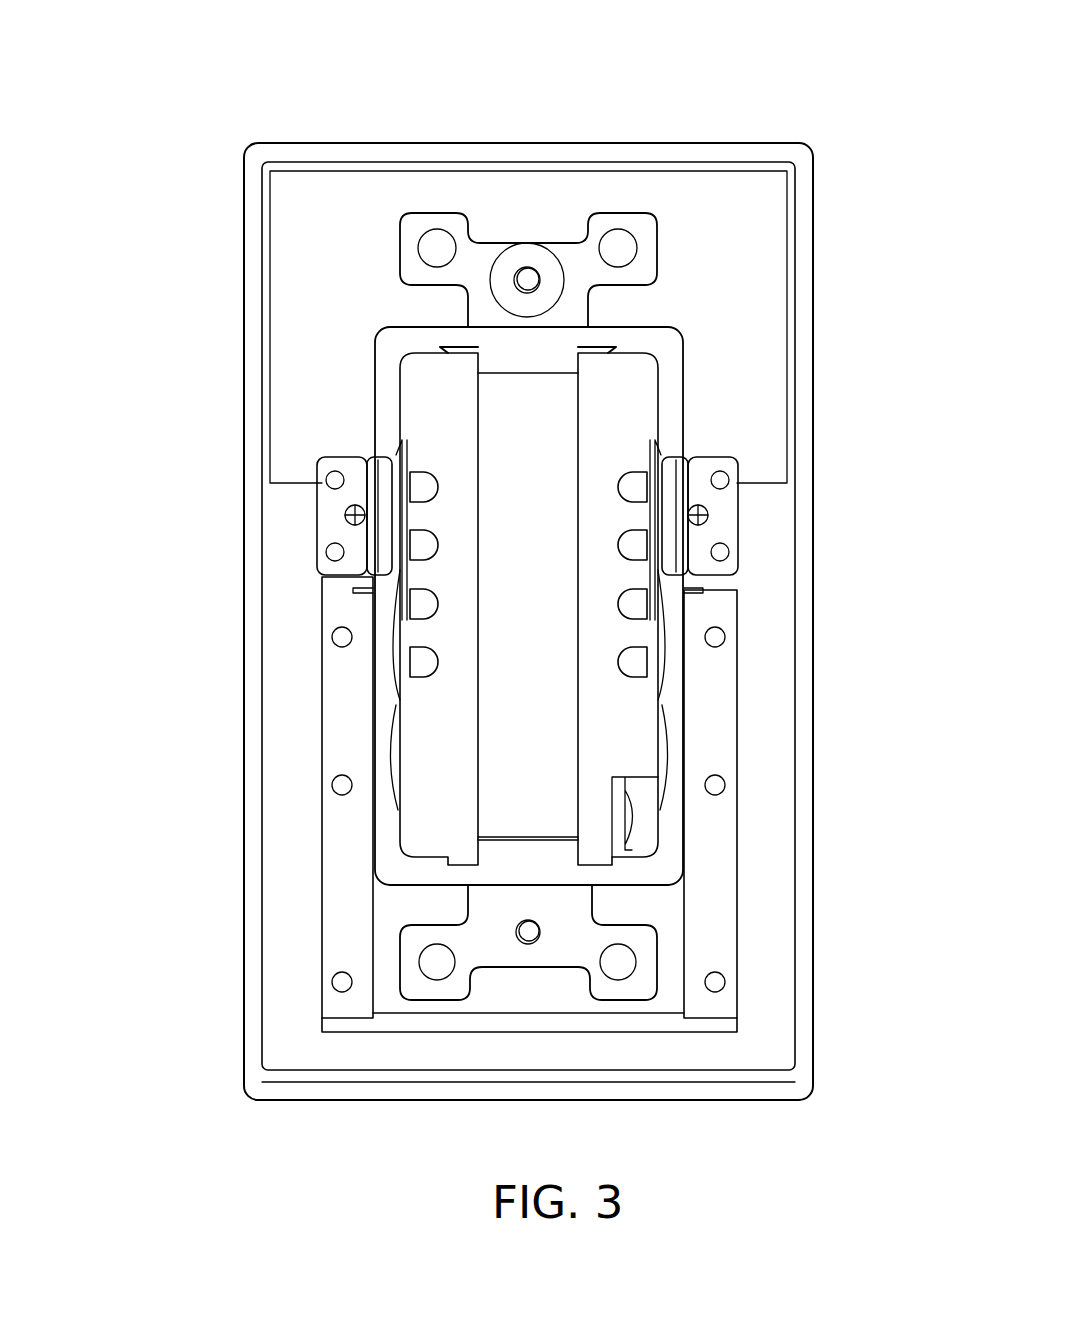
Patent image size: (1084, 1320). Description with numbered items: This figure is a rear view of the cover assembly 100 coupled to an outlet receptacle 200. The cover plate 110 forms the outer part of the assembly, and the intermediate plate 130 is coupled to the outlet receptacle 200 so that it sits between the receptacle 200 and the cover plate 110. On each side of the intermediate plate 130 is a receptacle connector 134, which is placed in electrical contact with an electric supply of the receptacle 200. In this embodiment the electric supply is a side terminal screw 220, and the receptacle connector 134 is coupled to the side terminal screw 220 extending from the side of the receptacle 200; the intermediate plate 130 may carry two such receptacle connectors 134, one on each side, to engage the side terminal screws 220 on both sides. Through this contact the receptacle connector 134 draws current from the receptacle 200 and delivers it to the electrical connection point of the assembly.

The cover assembly 100 is at (240, 113).
The cover plate 110 is at (682, 228).
The intermediate plate 130 is at (385, 350).
The receptacle connector 134 is at (375, 493).
The outlet receptacle 200 is at (670, 378).
The side terminal screw 220 is at (400, 643).